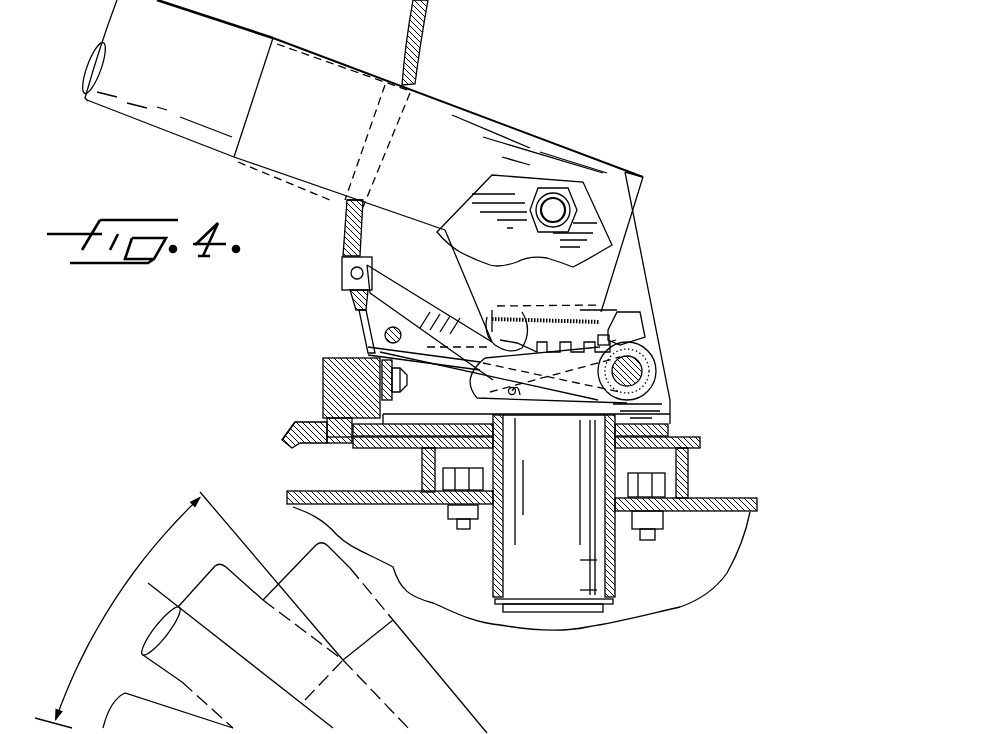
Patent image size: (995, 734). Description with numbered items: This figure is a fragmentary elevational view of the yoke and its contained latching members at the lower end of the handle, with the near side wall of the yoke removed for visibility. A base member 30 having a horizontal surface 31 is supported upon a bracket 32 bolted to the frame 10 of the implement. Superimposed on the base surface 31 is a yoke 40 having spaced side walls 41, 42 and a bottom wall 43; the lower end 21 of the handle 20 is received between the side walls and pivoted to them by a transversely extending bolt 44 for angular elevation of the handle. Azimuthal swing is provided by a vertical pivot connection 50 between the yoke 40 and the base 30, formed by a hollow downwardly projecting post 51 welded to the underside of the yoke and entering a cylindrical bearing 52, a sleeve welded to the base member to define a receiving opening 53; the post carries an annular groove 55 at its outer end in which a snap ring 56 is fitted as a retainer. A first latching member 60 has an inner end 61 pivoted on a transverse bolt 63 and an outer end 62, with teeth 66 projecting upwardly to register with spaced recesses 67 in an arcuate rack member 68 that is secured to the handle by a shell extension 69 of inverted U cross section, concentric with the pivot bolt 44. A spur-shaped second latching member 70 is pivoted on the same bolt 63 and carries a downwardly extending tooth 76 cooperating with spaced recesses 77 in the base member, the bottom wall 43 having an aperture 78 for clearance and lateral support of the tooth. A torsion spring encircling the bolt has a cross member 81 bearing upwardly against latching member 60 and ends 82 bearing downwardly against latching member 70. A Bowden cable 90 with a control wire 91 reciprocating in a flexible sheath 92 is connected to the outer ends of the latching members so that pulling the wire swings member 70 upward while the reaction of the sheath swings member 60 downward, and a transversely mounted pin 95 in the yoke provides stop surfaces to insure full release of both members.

The frame 10 is at (730, 540).
The outer sleeve of pole 20 is at (137, 131).
The lower end of the handle 21 is at (535, 138).
The base member 30 is at (697, 457).
The horizontal surface 31 is at (391, 449).
The bracket 32 is at (690, 484).
The yoke 40 is at (657, 335).
The side wall 41 is at (463, 213).
The side wall 42 is at (628, 280).
The bottom wall 43 is at (672, 428).
The bolt 44 is at (560, 210).
The vertical pivot connection 50 is at (492, 553).
The post 51 is at (565, 523).
The cylindrical bearing 52 is at (590, 565).
The receiving opening 53 is at (596, 590).
The annular groove 55 is at (540, 600).
The snap ring 56 is at (605, 606).
The latching member 60 is at (417, 277).
The inner end 61 is at (660, 364).
The outer end 62 is at (342, 272).
The bolt 63 is at (633, 385).
The teeth 66 is at (525, 345).
The recesses 67 is at (612, 345).
The arcuate rack member 68 is at (617, 313).
The shell extension 69 is at (620, 184).
The second latching member 70 is at (316, 388).
The tooth 76 is at (332, 445).
The recesses 77 is at (327, 445).
The aperture 78 is at (323, 418).
The cross member 81 is at (520, 395).
The ends 82 is at (427, 363).
The Bowden cable 90 is at (433, 43).
The control wire 91 is at (363, 325).
The flexible sheath 92 is at (347, 225).
The pin 95 is at (385, 333).